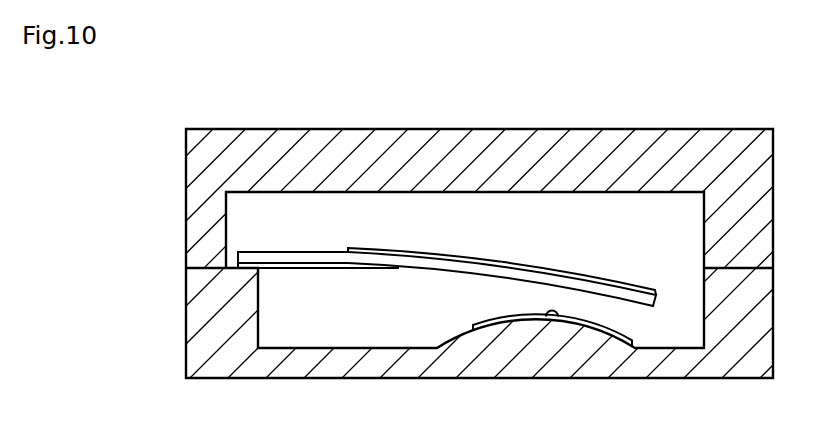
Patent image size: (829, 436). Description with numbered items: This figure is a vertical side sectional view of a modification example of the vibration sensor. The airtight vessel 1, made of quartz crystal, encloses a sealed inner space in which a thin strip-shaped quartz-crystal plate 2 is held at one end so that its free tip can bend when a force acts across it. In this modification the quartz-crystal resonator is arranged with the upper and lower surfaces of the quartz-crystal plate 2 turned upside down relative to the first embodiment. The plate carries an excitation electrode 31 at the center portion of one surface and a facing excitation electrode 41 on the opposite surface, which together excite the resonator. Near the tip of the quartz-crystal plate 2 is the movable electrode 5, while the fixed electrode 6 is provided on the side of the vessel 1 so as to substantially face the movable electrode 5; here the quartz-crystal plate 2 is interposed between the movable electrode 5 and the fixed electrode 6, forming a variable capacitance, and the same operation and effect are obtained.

The airtight vessel 1 is at (293, 130).
The quartz-crystal plate 2 is at (453, 263).
The excitation electrode 31 is at (376, 248).
The movable electrode 5 is at (603, 279).
The excitation electrode 41 is at (367, 270).
The fixed electrode 6 is at (552, 318).